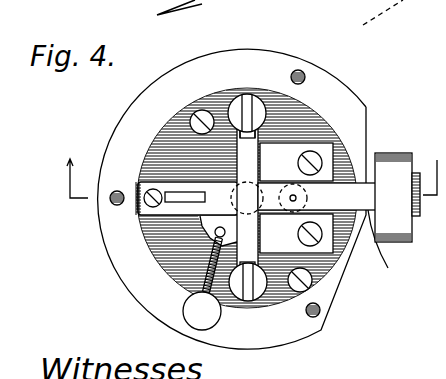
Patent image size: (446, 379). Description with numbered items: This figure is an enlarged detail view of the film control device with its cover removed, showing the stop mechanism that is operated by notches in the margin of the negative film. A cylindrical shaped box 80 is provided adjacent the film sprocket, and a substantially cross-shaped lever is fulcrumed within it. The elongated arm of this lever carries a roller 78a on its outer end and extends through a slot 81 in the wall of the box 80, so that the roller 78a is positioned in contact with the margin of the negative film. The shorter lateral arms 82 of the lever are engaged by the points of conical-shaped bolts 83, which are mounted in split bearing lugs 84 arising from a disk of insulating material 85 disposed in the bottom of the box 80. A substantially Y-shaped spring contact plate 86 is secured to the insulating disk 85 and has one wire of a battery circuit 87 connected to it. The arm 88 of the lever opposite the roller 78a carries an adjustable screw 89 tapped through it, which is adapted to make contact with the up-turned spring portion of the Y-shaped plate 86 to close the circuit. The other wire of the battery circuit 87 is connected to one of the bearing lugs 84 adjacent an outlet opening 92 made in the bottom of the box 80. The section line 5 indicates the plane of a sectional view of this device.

The section line 5 is at (252, 166).
The roller 78a is at (393, 153).
The cylindrical shaped box 80 is at (240, 283).
The slot 81 is at (392, 248).
The shorter lateral arms 82 is at (258, 148).
The conical-shaped bolts 83 is at (256, 100).
The split bearing lugs 84 is at (230, 110).
The disk of insulating material 85 is at (168, 250).
The Y-shaped spring contact plate 86 is at (213, 162).
The battery circuit 87 is at (185, 283).
The arm 88 is at (160, 236).
The adjustable screw 89 is at (141, 207).
The outlet opening 92 is at (197, 313).